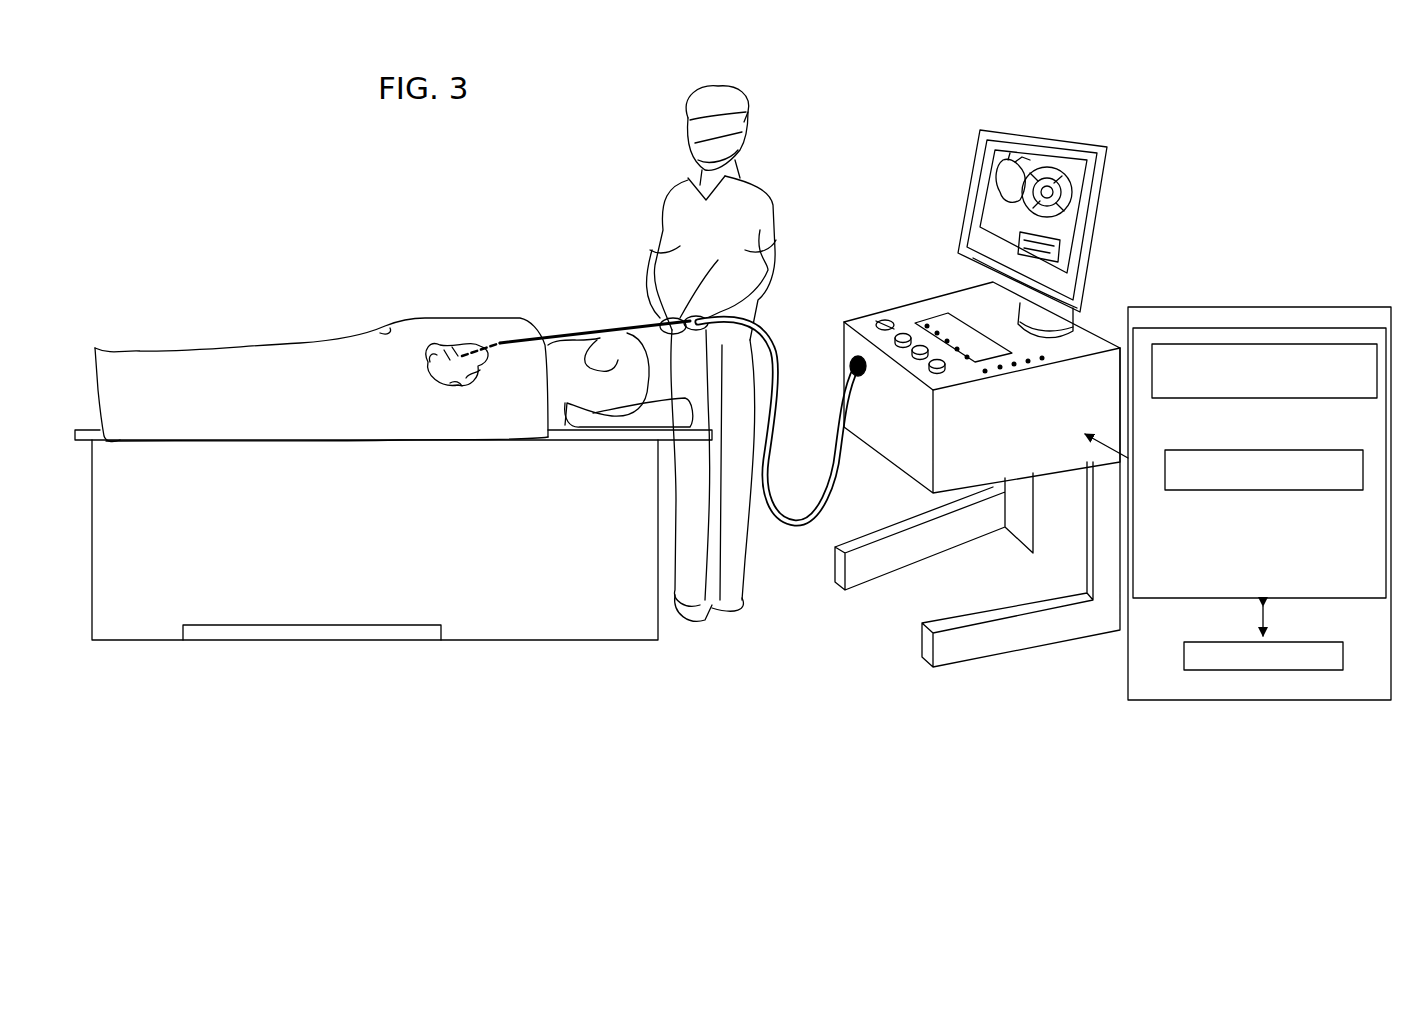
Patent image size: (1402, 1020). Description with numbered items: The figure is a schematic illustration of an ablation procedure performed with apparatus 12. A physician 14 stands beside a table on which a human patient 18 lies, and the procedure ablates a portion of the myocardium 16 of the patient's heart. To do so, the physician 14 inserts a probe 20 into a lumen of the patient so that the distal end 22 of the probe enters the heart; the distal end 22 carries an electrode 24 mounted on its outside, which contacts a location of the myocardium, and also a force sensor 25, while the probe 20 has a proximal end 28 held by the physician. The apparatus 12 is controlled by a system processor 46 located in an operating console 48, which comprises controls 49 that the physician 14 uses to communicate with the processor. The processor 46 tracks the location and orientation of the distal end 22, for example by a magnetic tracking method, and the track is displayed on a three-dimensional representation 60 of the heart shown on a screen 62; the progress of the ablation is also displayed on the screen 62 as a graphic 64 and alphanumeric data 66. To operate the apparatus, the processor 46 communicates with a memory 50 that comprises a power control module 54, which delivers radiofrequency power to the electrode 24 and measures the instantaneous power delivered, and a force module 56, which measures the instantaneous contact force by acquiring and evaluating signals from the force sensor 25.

The apparatus 12 is at (857, 123).
The physician 14 is at (716, 95).
The myocardium 16 is at (440, 318).
The patient 18 is at (178, 365).
The probe 20 is at (548, 320).
The distal end 22 is at (476, 297).
The electrode 24 is at (396, 297).
The force sensor 25 is at (407, 243).
The proximal end 28 is at (832, 372).
The system processor 46 is at (1197, 672).
The operating console 48 is at (926, 300).
The controls 49 is at (885, 320).
The memory 50 is at (1157, 600).
The power control module 54 is at (1256, 399).
The force module 56 is at (1350, 450).
The three-dimensional representation 60 is at (1000, 140).
The screen 62 is at (977, 143).
The graphic 64 is at (1050, 167).
The alphanumeric data 66 is at (1022, 237).